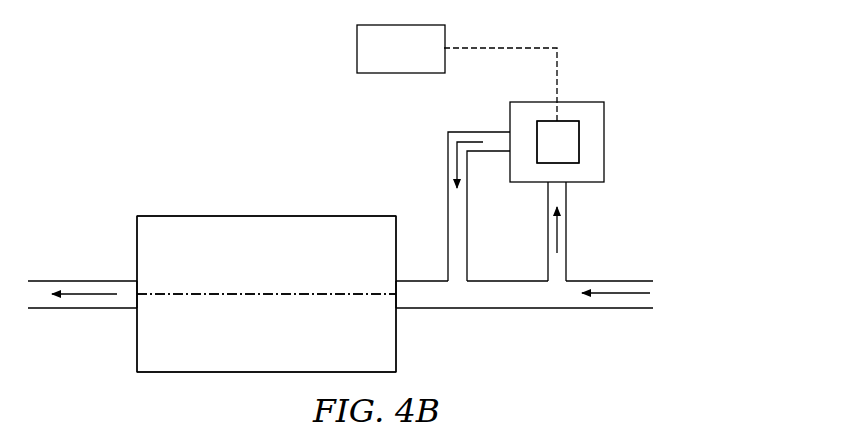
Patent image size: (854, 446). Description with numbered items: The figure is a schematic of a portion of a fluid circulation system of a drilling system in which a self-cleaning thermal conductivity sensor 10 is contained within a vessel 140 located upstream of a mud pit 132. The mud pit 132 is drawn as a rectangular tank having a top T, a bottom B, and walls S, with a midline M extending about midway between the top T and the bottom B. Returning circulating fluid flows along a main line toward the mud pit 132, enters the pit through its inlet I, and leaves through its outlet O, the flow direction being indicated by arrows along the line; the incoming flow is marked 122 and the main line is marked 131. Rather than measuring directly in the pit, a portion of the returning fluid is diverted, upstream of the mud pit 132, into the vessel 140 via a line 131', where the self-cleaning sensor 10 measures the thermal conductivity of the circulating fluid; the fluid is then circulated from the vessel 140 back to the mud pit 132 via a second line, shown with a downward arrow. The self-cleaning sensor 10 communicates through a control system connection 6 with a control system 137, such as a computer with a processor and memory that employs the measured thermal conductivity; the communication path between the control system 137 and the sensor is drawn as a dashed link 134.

The control system 137 is at (417, 59).
The communication link 134 is at (461, 48).
The control system connection 6 is at (558, 113).
The self-cleaning thermal conductivity sensor 10 is at (568, 152).
The vessel 140 is at (604, 125).
The main duct 131 is at (340, 311).
The line 131' is at (596, 231).
The incoming flow 122 is at (650, 293).
The mud pit 132 is at (283, 361).
The wall S is at (137, 240).
The top T is at (245, 216).
The bottom B is at (255, 372).
The outlet O is at (140, 294).
The inlet I is at (396, 293).
The midline M is at (276, 294).